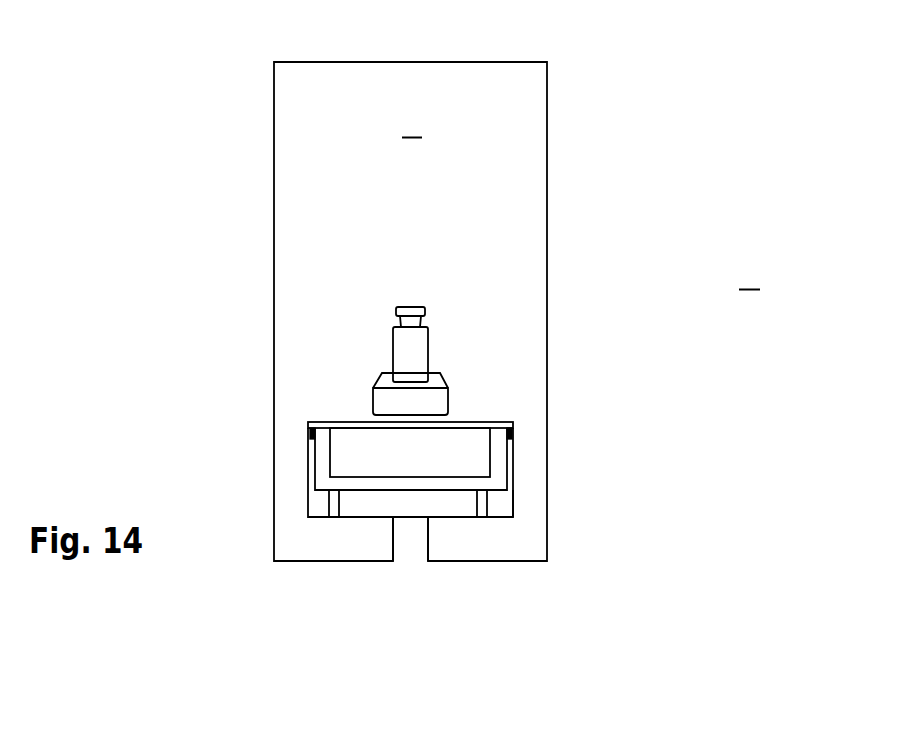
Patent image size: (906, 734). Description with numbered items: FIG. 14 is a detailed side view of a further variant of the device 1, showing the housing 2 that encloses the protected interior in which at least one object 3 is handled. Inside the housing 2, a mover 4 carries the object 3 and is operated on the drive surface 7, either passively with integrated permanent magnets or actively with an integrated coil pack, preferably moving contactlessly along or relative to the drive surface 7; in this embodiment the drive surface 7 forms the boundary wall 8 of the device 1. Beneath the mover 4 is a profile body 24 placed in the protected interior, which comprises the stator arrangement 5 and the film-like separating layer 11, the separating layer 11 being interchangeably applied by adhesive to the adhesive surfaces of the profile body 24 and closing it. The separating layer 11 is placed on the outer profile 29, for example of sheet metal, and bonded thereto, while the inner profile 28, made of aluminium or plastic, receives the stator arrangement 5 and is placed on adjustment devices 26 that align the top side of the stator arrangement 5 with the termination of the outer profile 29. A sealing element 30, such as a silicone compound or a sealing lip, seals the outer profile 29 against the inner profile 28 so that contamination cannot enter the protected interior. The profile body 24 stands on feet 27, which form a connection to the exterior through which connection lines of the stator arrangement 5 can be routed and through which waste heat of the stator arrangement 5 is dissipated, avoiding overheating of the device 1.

The device 1 is at (634, 94).
The housing 2 is at (547, 242).
The object 3 is at (403, 339).
The mover 4 is at (403, 397).
The stator arrangement 5 is at (367, 447).
The drive surface 7 is at (410, 425).
The boundary wall 8 is at (513, 388).
The separating layer 11 is at (478, 422).
The profile body 24 is at (542, 481).
The adjustment device 26 is at (335, 498).
The foot 27 is at (403, 540).
The inner profile 28 is at (317, 457).
The outer profile 29 is at (513, 506).
The sealing element 30 is at (311, 434).